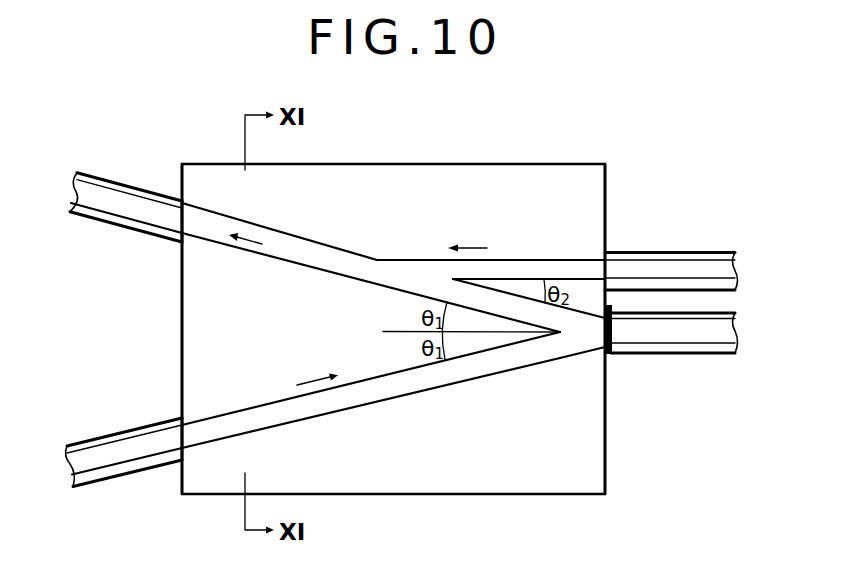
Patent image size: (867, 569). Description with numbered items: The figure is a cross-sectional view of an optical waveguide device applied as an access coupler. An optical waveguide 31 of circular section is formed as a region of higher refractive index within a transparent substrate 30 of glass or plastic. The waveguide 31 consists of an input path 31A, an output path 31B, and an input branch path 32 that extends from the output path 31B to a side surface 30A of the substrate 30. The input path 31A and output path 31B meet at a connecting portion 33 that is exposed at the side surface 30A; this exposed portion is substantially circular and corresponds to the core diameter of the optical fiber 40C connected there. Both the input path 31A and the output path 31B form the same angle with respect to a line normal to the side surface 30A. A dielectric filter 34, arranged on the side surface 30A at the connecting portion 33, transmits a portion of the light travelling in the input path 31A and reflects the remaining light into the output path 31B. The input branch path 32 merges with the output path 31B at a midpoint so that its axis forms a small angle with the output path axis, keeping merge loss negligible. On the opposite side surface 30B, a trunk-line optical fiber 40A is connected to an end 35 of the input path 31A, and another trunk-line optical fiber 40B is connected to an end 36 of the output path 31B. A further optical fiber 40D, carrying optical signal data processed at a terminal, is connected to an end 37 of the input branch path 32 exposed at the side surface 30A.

The transparent substrate 30 is at (544, 482).
The side surface of the substrate 30A is at (606, 447).
The side surface of the substrate 30B is at (182, 476).
The optical waveguide 31 is at (371, 330).
The input path 31A is at (383, 390).
The output path 31B is at (333, 252).
The input branch path 32 is at (544, 268).
The connecting portion 33 is at (582, 350).
The dielectric filter 34 is at (614, 332).
The end of the input path 35 is at (177, 432).
The end of the output path 36 is at (178, 214).
The end of the input branch path 37 is at (605, 274).
The optical fiber 40A is at (119, 430).
The optical fiber 40B is at (119, 230).
The optical fiber 40C is at (713, 355).
The optical fiber 40D is at (692, 252).